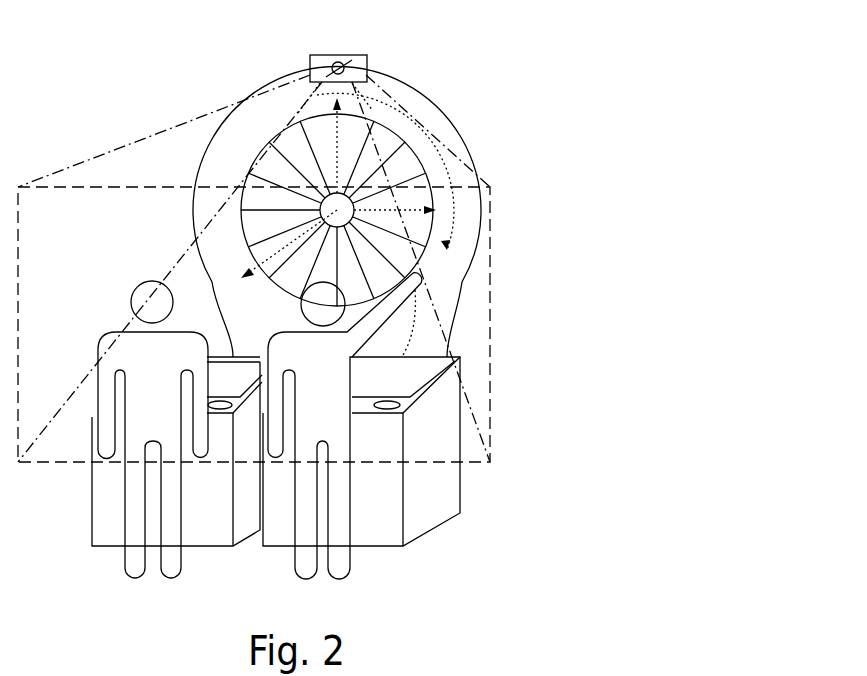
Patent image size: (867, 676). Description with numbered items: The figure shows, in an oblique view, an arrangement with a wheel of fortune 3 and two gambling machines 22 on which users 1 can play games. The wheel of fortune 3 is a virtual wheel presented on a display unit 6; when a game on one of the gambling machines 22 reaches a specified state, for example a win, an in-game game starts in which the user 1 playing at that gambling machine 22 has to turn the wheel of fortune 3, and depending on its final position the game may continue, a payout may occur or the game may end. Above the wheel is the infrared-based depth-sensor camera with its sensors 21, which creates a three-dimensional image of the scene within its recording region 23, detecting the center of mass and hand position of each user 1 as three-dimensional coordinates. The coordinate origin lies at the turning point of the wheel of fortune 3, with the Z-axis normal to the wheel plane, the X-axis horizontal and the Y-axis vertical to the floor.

The user 1 is at (133, 348).
The wheel of fortune 3 is at (489, 130).
The display unit 6 is at (380, 147).
The sensor 21 is at (336, 64).
The gambling machine 22 is at (107, 502).
The recording region 23 is at (56, 176).